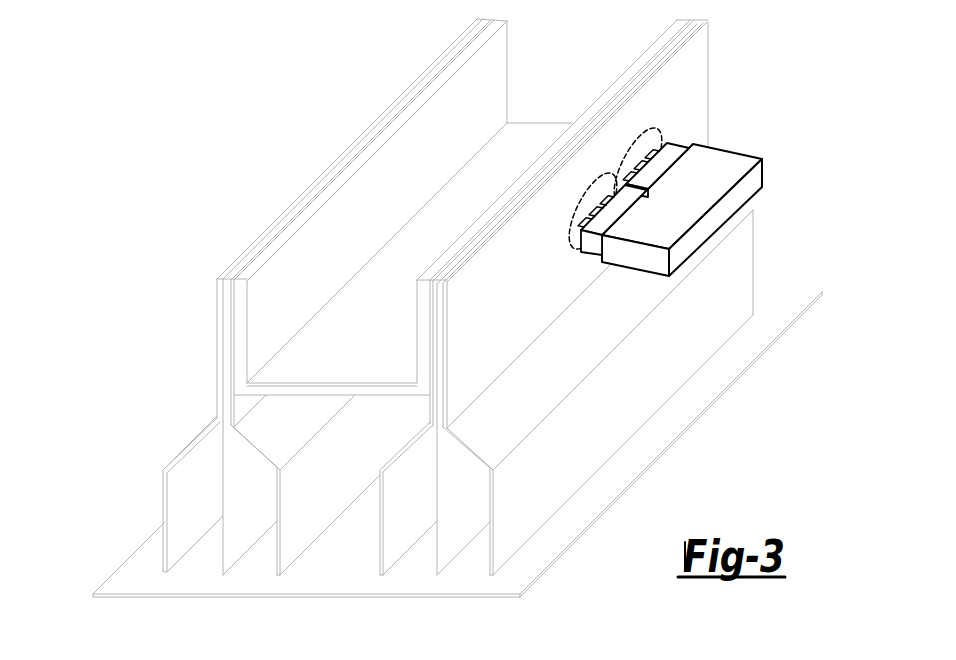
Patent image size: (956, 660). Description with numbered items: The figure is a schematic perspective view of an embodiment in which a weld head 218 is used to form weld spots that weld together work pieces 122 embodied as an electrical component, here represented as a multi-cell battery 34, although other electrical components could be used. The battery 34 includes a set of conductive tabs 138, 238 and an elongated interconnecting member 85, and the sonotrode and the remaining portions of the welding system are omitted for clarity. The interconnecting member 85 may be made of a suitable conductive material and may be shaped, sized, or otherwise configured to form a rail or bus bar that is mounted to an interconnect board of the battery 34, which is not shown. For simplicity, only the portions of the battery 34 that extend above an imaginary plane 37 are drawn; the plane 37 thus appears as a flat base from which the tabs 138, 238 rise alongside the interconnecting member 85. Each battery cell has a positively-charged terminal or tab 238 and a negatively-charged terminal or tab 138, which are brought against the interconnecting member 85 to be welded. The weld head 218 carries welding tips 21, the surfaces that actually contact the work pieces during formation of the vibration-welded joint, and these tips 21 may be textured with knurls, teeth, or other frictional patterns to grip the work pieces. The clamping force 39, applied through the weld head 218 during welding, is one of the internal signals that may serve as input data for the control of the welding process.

The work pieces 122 is at (740, 47).
The multi-cell battery 34 is at (344, 106).
The elongated interconnecting member 85 is at (542, 135).
The welding tips 21 is at (678, 143).
The weld head 218 is at (725, 152).
The clamping force 39 is at (577, 240).
The negatively-charged tab 138 is at (180, 505).
The positively-charged tab 238 is at (502, 538).
The imaginary plane 37 is at (138, 588).